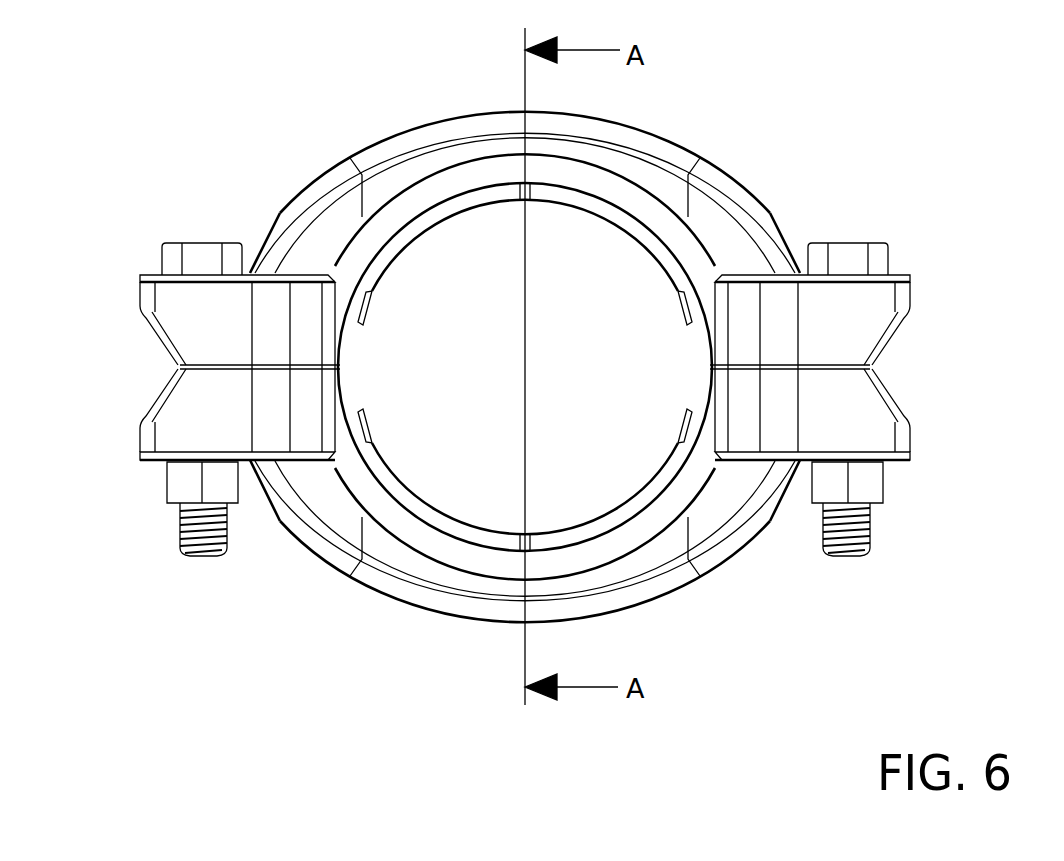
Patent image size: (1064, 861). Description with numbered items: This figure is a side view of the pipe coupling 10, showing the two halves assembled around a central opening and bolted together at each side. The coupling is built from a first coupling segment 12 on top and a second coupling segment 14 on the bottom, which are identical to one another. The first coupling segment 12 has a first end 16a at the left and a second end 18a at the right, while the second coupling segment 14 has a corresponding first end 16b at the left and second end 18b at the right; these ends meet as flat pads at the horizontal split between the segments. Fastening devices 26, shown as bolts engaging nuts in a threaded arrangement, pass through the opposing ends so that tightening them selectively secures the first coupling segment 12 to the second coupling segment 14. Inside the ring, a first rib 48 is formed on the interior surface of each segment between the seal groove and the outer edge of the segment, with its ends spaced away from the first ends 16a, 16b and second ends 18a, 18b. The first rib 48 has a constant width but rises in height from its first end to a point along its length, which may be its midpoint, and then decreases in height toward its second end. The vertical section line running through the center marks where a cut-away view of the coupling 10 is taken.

The pipe coupling 10 is at (860, 102).
The first coupling segment 12 is at (652, 143).
The second coupling segment 14 is at (408, 593).
The first end of the first coupling segment 16a is at (138, 290).
The first end of the second coupling segment 16b is at (138, 462).
The second end of the first coupling segment 18a is at (912, 290).
The second end of the second coupling segment 18b is at (905, 440).
The fastening devices 26 is at (200, 252).
The first rib 48 is at (628, 228).